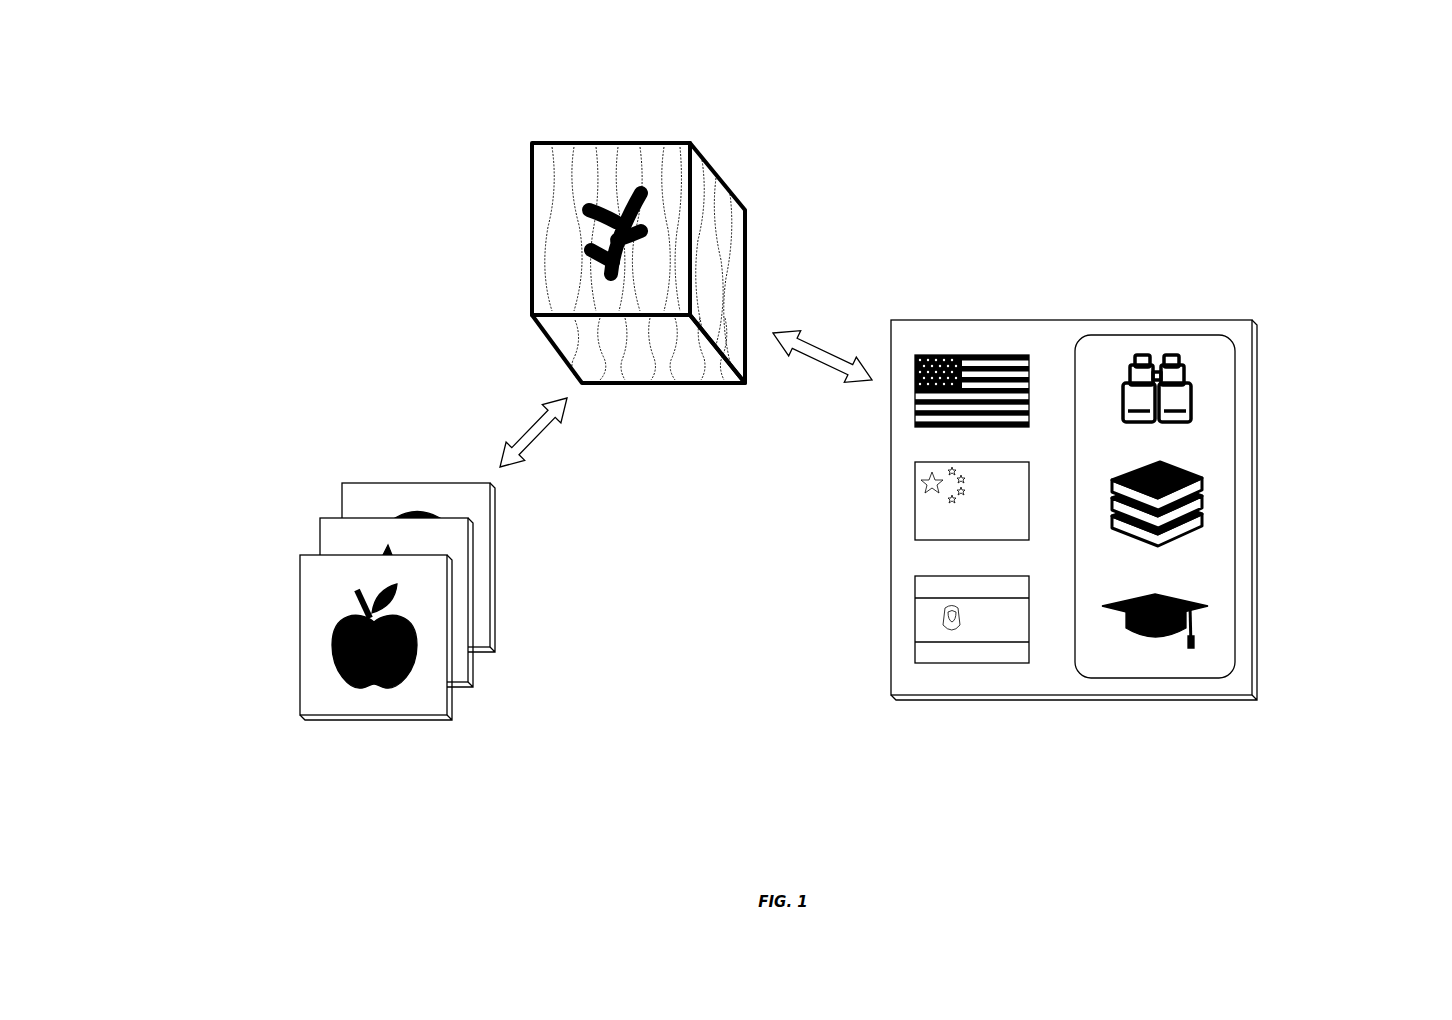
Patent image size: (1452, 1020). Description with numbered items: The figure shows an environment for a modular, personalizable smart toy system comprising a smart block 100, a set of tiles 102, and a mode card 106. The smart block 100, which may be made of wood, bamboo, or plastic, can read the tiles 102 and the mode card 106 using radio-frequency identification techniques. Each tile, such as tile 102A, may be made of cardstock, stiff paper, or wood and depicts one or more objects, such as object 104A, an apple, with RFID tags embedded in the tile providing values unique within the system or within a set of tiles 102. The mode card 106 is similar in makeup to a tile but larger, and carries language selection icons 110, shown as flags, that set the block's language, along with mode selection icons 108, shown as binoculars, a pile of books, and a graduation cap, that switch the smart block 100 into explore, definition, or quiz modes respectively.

The smart block 100 is at (628, 134).
The tiles 102 is at (247, 507).
The tile 102A is at (313, 620).
The object 104A is at (331, 637).
The mode card 106 is at (1113, 320).
The mode selection icons 108 is at (1257, 403).
The language selection icons 110 is at (1050, 716).